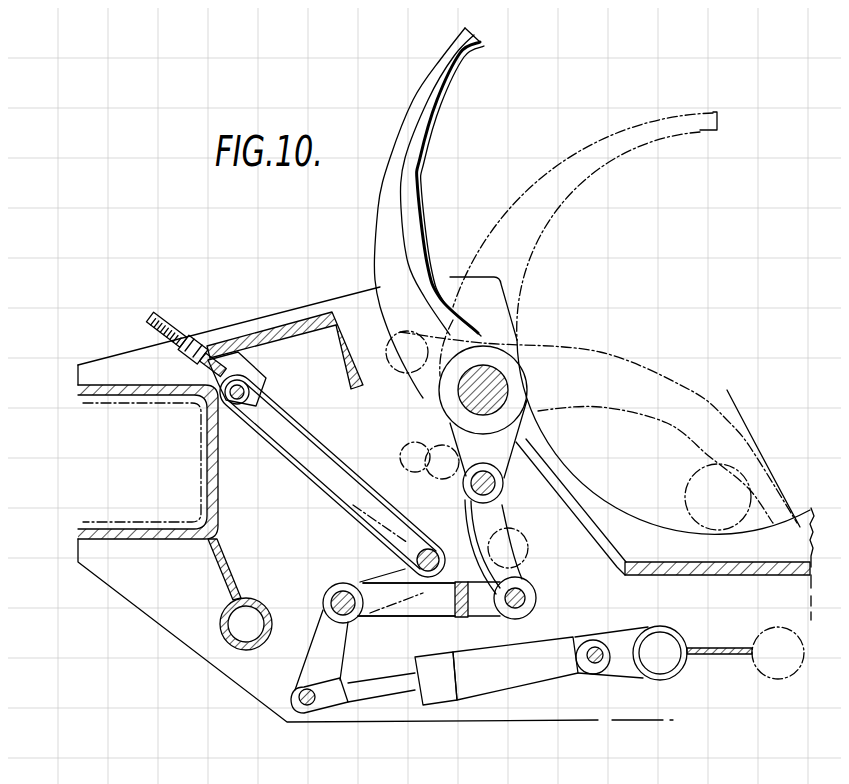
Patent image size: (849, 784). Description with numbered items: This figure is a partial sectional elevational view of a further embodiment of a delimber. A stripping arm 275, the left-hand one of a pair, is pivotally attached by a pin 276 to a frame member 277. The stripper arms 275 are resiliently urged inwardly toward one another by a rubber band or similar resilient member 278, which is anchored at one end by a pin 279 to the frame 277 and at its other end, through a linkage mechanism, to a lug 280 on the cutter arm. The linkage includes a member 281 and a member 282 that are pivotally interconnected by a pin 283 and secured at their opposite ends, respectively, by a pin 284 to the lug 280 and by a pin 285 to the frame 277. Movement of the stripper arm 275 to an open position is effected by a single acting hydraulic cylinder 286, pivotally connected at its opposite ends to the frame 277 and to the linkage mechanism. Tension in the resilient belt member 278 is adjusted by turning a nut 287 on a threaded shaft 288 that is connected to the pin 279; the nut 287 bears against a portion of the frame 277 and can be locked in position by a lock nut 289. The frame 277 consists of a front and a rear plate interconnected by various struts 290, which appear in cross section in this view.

The stripping arm 275 is at (390, 200).
The pin 276 is at (492, 369).
The frame member 277 is at (369, 309).
The resilient member 278 is at (300, 424).
The pin 279 is at (241, 378).
The lug 280 is at (459, 439).
The member 281 is at (479, 520).
The member 282 is at (474, 602).
The pin 283 is at (519, 584).
The pin 284 is at (489, 475).
The pin 285 is at (332, 582).
The single acting hydraulic cylinder 286 is at (527, 632).
The nut 287 is at (170, 345).
The threaded shaft 288 is at (159, 328).
The lock nut 289 is at (182, 330).
The strut 290 is at (602, 539).